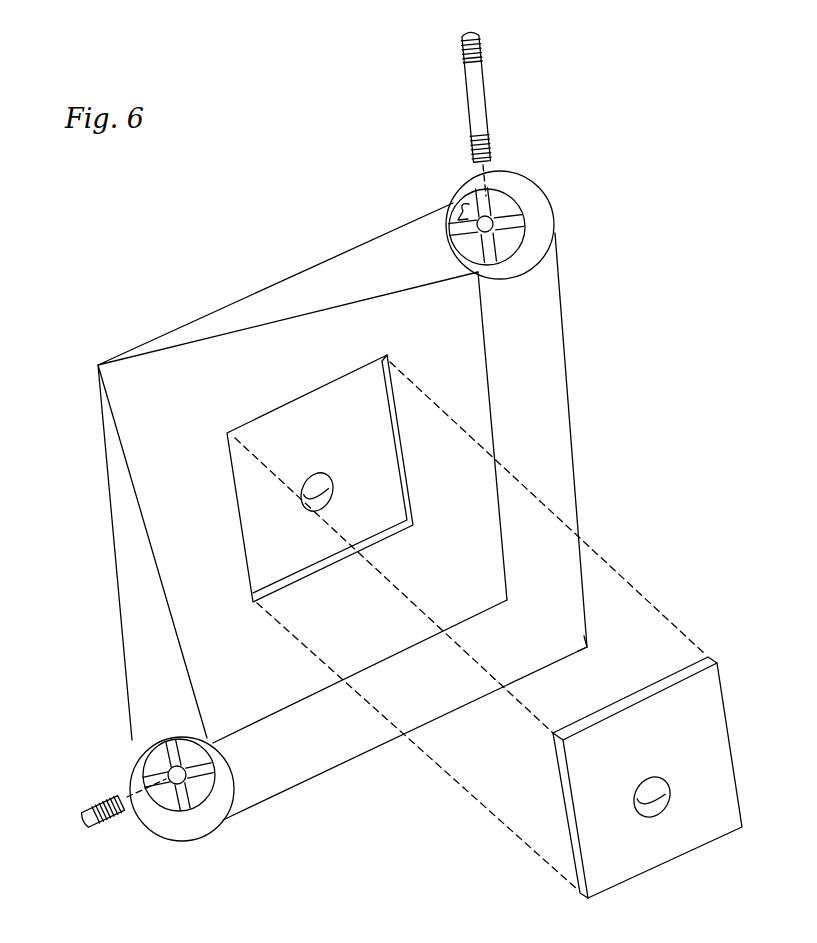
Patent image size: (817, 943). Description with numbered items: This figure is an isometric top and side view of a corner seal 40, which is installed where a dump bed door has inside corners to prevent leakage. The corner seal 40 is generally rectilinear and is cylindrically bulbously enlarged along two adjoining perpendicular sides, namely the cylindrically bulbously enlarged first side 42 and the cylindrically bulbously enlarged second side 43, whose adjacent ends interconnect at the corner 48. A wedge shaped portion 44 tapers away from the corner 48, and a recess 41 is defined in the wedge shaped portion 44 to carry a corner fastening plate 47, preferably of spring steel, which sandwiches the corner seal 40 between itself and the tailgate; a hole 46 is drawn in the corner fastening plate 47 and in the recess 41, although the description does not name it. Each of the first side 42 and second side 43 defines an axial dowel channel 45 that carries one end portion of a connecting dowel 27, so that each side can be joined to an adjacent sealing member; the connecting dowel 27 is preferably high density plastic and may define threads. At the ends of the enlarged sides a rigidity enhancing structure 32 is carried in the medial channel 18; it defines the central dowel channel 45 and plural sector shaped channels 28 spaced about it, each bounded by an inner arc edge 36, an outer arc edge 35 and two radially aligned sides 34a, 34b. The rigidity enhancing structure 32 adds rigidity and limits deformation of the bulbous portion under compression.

The medial channel 18 is at (520, 205).
The connecting dowel 27 is at (468, 102).
The sector shaped channel 28 is at (458, 210).
The rigidity enhancing structure 32 is at (483, 207).
The radially aligned side 34a is at (452, 232).
The radially aligned side 34b is at (487, 253).
The outer arc edge 35 is at (527, 228).
The inner arc edge 36 is at (503, 241).
The corner seal 40 is at (574, 465).
The recess 41 is at (265, 437).
The cylindrically bulbously enlarged first side 42 is at (537, 418).
The cylindrically bulbously enlarged second side 43 is at (322, 743).
The wedge shaped portion 44 is at (147, 408).
The dowel channel 45 is at (492, 216).
The hole 46 is at (312, 487).
The corner fastening plate 47 is at (698, 720).
The corner 48 is at (587, 647).